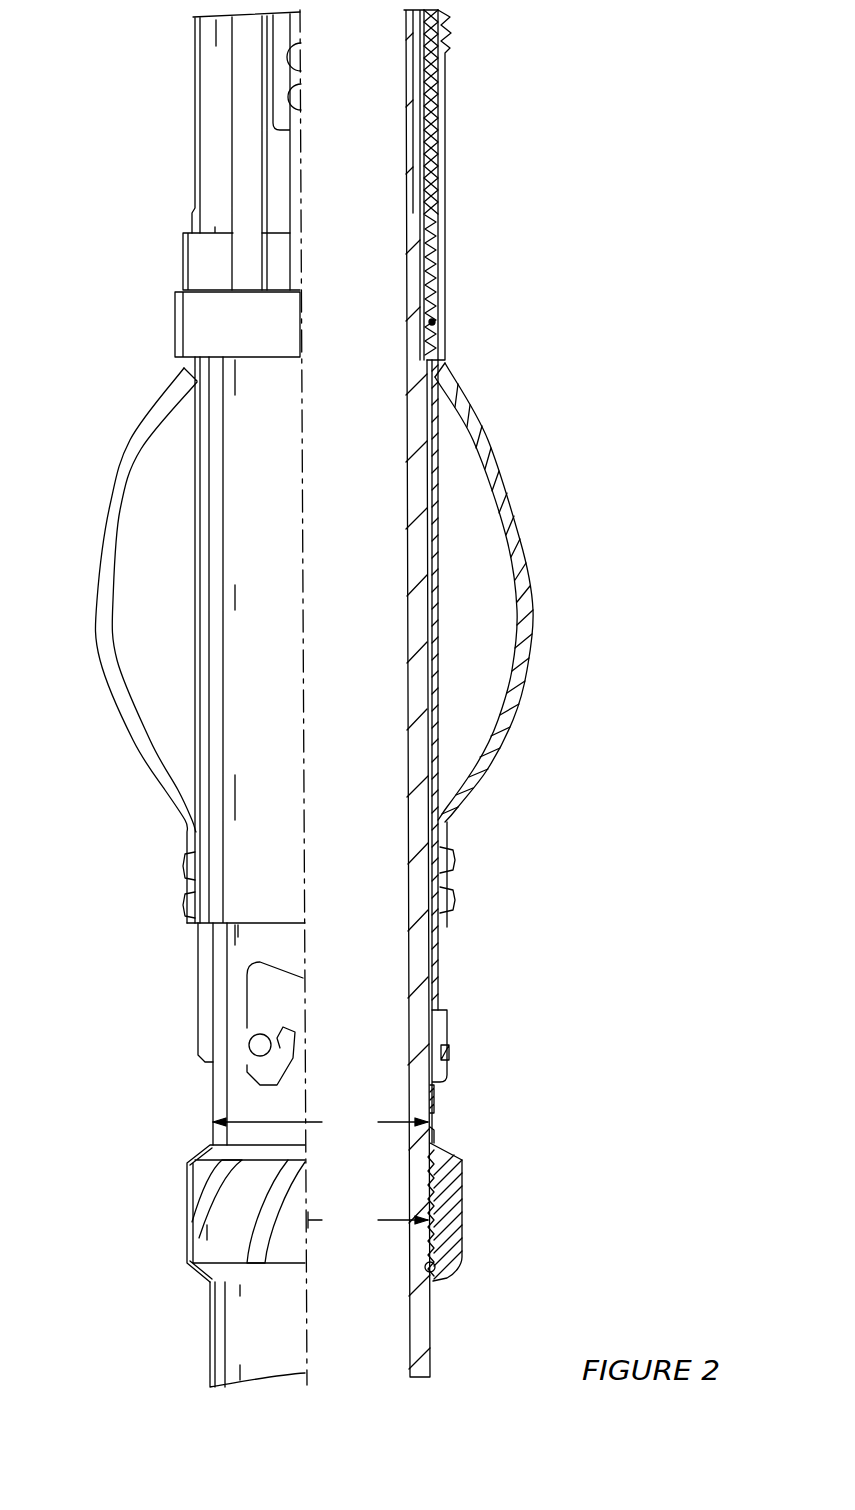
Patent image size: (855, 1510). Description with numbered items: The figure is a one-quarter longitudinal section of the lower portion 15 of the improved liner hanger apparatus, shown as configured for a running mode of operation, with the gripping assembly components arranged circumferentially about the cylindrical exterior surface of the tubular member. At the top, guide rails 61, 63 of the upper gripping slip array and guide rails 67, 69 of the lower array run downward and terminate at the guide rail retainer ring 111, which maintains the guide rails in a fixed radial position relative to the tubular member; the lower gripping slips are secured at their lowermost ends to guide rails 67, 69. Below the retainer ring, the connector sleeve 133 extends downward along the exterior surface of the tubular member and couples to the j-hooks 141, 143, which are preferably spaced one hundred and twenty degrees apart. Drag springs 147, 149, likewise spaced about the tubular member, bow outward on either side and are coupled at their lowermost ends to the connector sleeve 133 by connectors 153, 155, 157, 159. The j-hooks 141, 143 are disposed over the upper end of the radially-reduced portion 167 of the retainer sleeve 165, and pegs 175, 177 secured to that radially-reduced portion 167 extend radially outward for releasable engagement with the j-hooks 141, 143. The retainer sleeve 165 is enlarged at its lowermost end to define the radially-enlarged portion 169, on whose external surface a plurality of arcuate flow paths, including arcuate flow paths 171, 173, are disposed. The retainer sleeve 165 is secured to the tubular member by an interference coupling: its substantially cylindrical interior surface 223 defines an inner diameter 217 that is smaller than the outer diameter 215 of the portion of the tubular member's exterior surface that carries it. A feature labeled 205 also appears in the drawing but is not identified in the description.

The lower portion 15 is at (526, 449).
The guide rail 61 is at (212, 128).
The guide rail 63 is at (440, 85).
The guide rail 67 is at (300, 213).
The guide rail 69 is at (440, 210).
The guide rail retainer ring 111 is at (176, 323).
The connector sleeve 133 is at (439, 598).
The j-hook 141 is at (206, 1017).
The j-hook 143 is at (445, 1012).
The drag spring 147 is at (103, 676).
The drag spring 149 is at (492, 730).
The connector 153 is at (184, 856).
The connector 155 is at (184, 896).
The connector 157 is at (455, 868).
The connector 159 is at (456, 903).
The retainer sleeve 165 is at (435, 1128).
The radially-reduced portion 167 is at (437, 1101).
The radially-enlarged portion 169 is at (462, 1230).
The arcuate flow path 171 is at (187, 1218).
The arcuate flow path 173 is at (212, 1285).
The peg 175 is at (250, 1052).
The peg 177 is at (449, 1053).
The threads 205 is at (462, 1192).
The outer diameter 215 is at (320, 1124).
The inner diameter 217 is at (368, 1222).
The interior surface 223 is at (435, 1281).